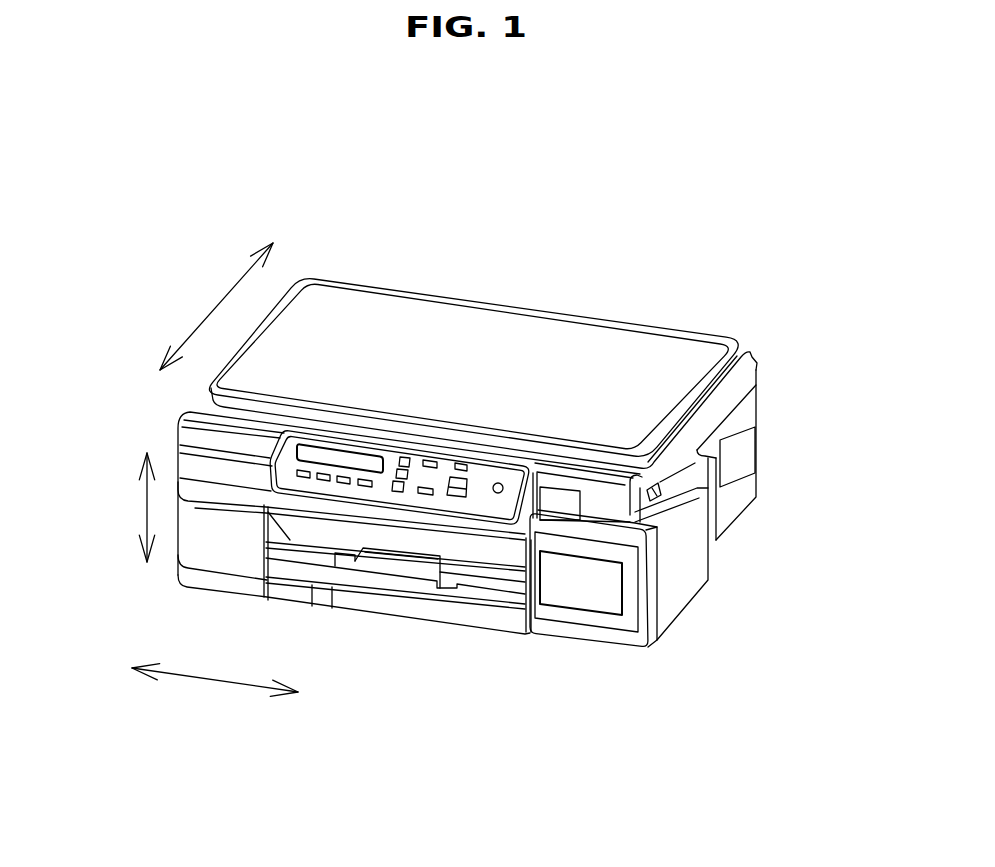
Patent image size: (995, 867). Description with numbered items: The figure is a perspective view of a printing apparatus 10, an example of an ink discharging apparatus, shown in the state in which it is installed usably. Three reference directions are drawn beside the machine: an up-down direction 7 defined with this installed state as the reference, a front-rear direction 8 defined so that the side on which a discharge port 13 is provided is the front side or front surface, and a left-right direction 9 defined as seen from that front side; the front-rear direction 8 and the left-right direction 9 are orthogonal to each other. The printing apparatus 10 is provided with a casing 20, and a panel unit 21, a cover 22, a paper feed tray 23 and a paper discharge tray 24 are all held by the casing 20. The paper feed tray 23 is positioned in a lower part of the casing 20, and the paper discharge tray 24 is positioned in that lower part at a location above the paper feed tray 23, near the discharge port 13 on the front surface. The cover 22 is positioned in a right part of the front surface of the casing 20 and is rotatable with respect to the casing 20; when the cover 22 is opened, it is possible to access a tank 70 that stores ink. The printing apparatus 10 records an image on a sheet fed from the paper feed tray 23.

The printing apparatus 10 is at (645, 313).
The discharge port 13 is at (458, 547).
The casing 20 is at (768, 402).
The panel unit 21 is at (294, 456).
The cover 22 is at (627, 622).
The paper feed tray 23 is at (395, 603).
The paper discharge tray 24 is at (315, 558).
The tank 70 is at (597, 590).
The up-down direction 7 is at (146, 505).
The front-rear direction 8 is at (217, 307).
The left-right direction 9 is at (215, 682).